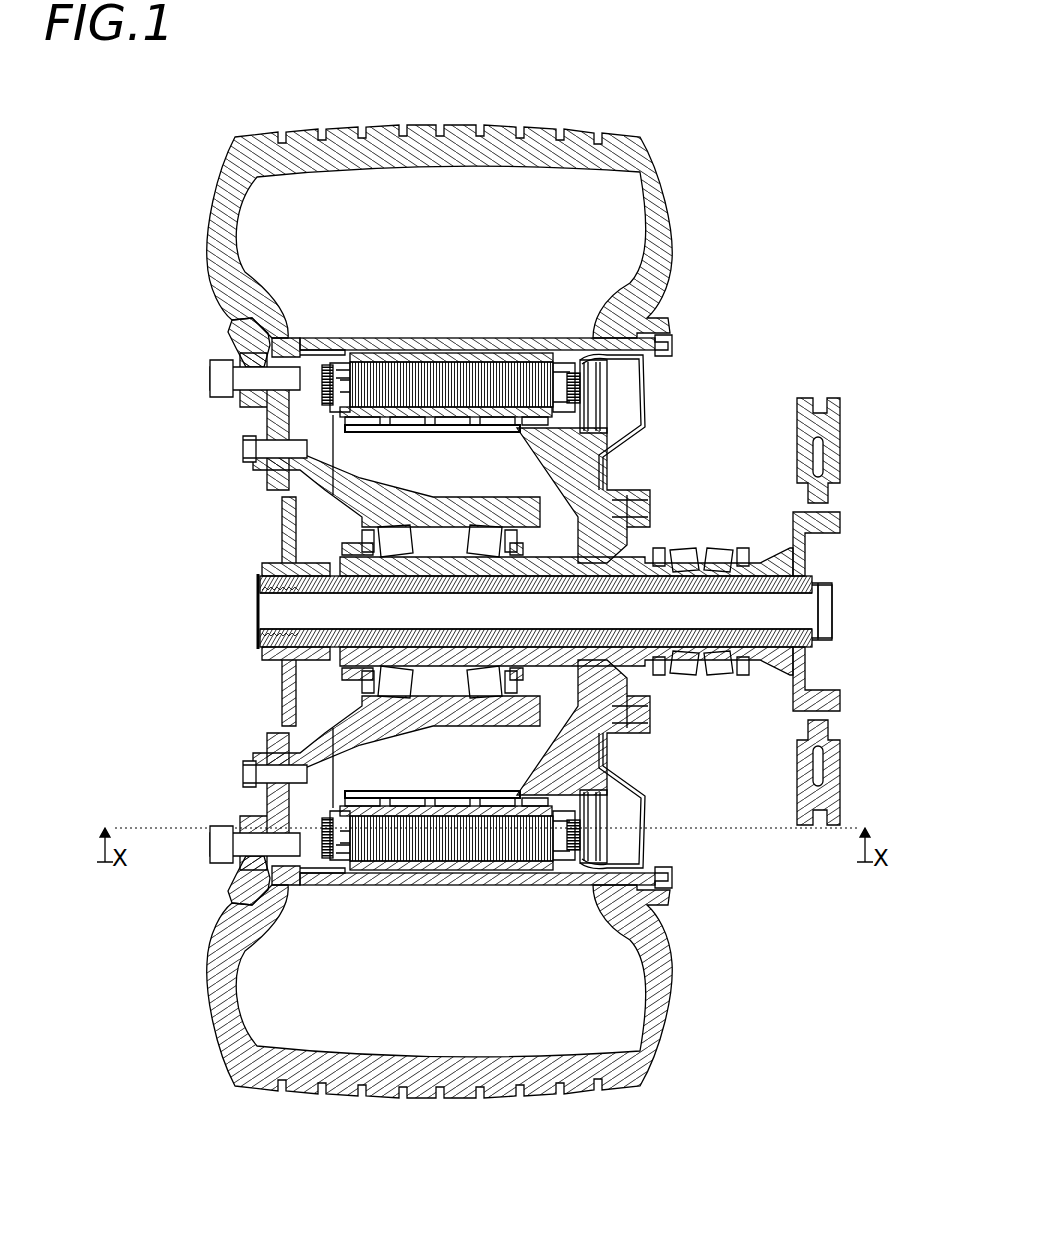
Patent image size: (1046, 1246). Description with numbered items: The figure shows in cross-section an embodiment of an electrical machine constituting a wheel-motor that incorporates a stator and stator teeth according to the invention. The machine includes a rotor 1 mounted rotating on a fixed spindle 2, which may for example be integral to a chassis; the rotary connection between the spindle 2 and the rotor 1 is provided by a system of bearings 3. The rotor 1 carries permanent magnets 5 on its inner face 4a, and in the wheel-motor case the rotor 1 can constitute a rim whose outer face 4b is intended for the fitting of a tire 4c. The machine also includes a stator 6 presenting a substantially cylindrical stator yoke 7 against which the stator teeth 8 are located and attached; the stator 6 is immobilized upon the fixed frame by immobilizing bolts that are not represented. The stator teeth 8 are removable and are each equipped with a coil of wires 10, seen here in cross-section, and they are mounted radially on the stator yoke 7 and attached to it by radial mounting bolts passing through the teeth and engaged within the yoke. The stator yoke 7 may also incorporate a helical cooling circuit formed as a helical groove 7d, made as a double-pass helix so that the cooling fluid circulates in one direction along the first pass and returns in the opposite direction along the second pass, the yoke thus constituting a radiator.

The rotor 1 is at (562, 338).
The fixed spindle 2 is at (623, 707).
The system of bearings 3 is at (420, 545).
The inner face 4a is at (392, 880).
The outer face 4b is at (330, 345).
The tire 4c is at (660, 185).
The permanent magnets 5 is at (532, 352).
The stator 6 is at (275, 762).
The stator yoke 7 is at (372, 418).
The helical groove 7d is at (490, 428).
The stator teeth 8 is at (318, 400).
The coil of wires 10 is at (305, 383).